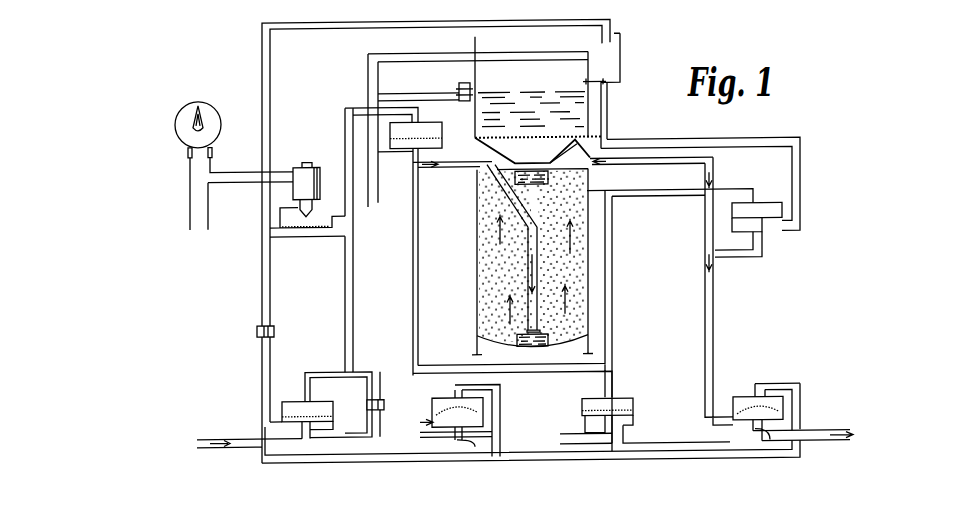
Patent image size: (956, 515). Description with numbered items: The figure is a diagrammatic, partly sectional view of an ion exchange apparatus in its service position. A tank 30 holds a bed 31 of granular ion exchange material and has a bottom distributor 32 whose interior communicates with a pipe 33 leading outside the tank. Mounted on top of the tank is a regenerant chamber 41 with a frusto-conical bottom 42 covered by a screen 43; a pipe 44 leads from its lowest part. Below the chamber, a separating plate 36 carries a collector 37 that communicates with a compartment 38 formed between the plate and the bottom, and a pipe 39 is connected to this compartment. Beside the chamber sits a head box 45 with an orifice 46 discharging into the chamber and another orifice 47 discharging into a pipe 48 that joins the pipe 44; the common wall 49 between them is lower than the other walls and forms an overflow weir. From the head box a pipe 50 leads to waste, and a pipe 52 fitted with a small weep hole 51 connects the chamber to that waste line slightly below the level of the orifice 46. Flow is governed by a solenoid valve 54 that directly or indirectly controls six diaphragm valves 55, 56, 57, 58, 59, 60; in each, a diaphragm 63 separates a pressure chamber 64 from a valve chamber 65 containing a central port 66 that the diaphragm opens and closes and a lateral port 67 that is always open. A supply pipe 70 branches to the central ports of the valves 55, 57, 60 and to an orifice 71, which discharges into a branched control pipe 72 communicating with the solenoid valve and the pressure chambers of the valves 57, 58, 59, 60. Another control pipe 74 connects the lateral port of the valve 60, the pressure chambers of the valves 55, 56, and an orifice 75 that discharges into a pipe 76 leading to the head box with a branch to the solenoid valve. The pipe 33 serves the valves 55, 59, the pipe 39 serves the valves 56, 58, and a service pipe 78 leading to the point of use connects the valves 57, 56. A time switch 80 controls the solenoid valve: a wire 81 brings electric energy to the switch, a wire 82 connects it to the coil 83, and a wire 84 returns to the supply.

The tank 30 is at (477, 290).
The bed 31 is at (478, 255).
The bottom distributor 32 is at (517, 352).
The pipe 33 is at (455, 177).
The separating plate 36 is at (486, 205).
The collector 37 is at (560, 183).
The compartment 38 is at (478, 156).
The pipe 39 is at (680, 180).
The regenerant chamber 41 is at (442, 130).
The bottom 42 is at (500, 168).
The screen 43 is at (520, 143).
The pipe 44 is at (674, 148).
The head box 45 is at (624, 44).
The orifice 46 is at (590, 86).
The orifice 47 is at (608, 88).
The pipe 48 is at (609, 114).
The common wall 49 is at (588, 54).
The pipe 50 is at (432, 57).
The weep hole 51 is at (458, 90).
The pipe 52 is at (414, 87).
The solenoid valve 54 is at (308, 234).
The diaphragm valve 55 is at (452, 398).
The diaphragm valve 56 is at (741, 402).
The diaphragm valve 57 is at (594, 403).
The diaphragm valve 58 is at (768, 209).
The diaphragm valve 59 is at (394, 158).
The diaphragm valve 60 is at (291, 403).
The diaphragm 63 is at (634, 416).
The pressure chamber 64 is at (618, 400).
The valve chamber 65 is at (582, 416).
The central port 66 is at (583, 432).
The lateral port 67 is at (634, 437).
The supply pipe 70 is at (232, 456).
The orifice 71 is at (367, 406).
The control pipe 72 is at (355, 303).
The control pipe 74 is at (262, 388).
The orifice 75 is at (257, 336).
The pipe 76 is at (272, 66).
The service pipe 78 is at (822, 452).
The time switch 80 is at (214, 106).
The wire 81 is at (190, 202).
The wire 82 is at (214, 177).
The coil 83 is at (320, 168).
The wire 84 is at (212, 218).